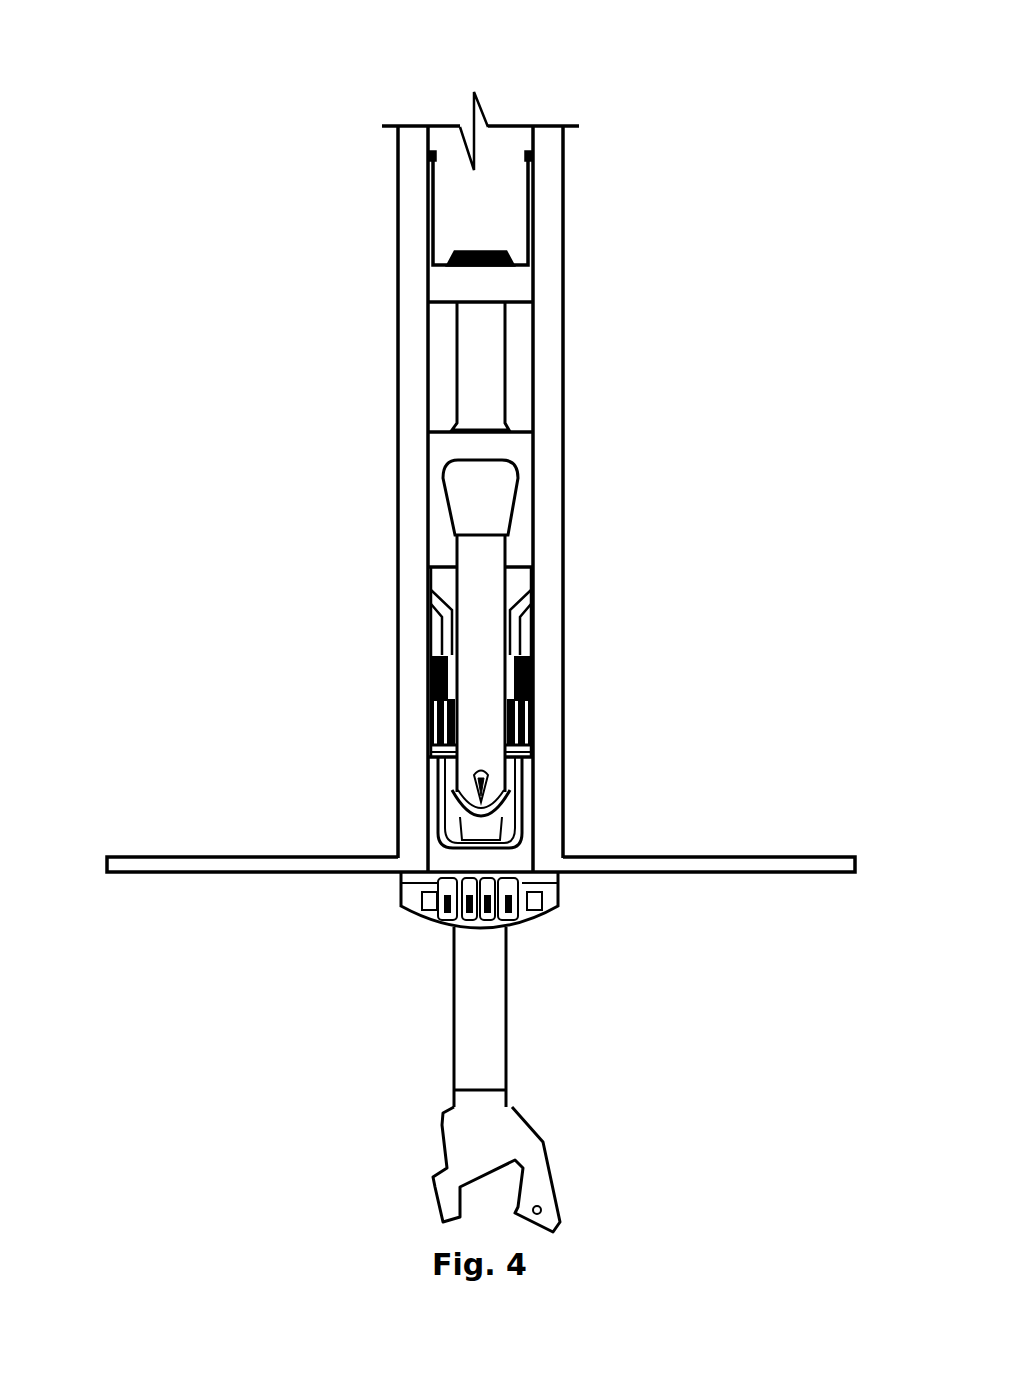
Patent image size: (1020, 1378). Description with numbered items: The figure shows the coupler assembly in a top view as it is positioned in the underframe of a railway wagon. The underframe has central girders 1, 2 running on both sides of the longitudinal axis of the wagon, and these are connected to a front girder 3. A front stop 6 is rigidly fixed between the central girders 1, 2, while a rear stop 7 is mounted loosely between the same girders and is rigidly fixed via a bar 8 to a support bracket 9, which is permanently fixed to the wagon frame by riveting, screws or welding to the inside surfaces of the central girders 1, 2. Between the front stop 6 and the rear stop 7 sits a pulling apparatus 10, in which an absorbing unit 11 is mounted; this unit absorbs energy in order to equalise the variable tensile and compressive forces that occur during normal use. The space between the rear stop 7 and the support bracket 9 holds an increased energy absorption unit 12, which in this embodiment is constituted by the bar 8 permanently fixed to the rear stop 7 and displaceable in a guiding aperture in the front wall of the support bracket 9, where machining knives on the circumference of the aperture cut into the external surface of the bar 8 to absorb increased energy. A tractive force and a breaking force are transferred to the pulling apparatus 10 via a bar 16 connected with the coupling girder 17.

The central girder 1 is at (362, 133).
The central girder 2 is at (586, 440).
The front girder 3 is at (481, 824).
The front stop 6 is at (608, 781).
The rear stop 7 is at (611, 568).
The bar 8 is at (615, 353).
The support bracket 9 is at (359, 370).
The pulling apparatus 10 is at (615, 620).
The absorbing unit 11 is at (615, 667).
The increased energy absorption unit 12 is at (615, 291).
The bar 16 is at (622, 1002).
The coupling girder 17 is at (618, 1112).